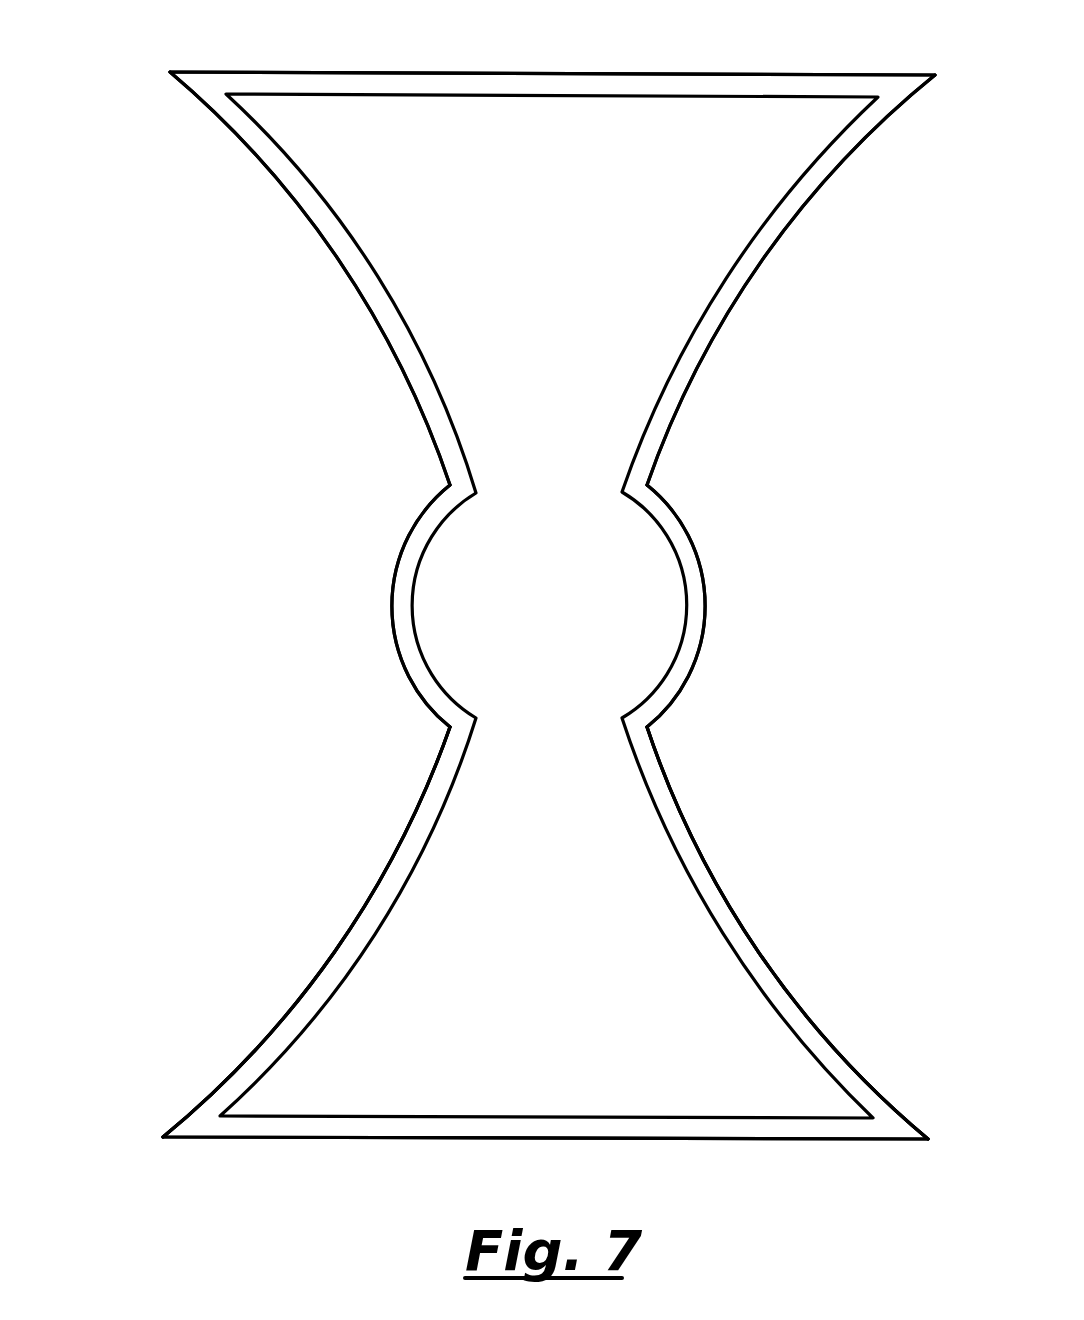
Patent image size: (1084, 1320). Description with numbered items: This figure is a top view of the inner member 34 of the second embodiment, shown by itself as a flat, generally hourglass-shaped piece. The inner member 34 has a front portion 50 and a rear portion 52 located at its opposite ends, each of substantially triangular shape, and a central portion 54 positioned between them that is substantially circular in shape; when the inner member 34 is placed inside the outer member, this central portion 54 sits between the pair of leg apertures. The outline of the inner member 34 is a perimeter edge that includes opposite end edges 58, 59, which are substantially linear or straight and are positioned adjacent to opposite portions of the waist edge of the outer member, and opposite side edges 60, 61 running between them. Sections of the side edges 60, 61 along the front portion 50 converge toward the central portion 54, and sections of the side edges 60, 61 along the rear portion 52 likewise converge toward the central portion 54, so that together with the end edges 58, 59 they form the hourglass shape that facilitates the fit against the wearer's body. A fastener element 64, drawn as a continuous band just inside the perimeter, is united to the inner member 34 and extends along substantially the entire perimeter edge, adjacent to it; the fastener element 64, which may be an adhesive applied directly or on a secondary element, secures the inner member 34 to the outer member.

The inner member 34 is at (413, 435).
The front portion 50 is at (622, 343).
The rear portion 52 is at (605, 912).
The central portion 54 is at (622, 625).
The end edge 58 is at (545, 73).
The end edge 59 is at (288, 1137).
The side edge 60 is at (350, 930).
The side edge 61 is at (758, 953).
The fastener element 64 is at (384, 82).